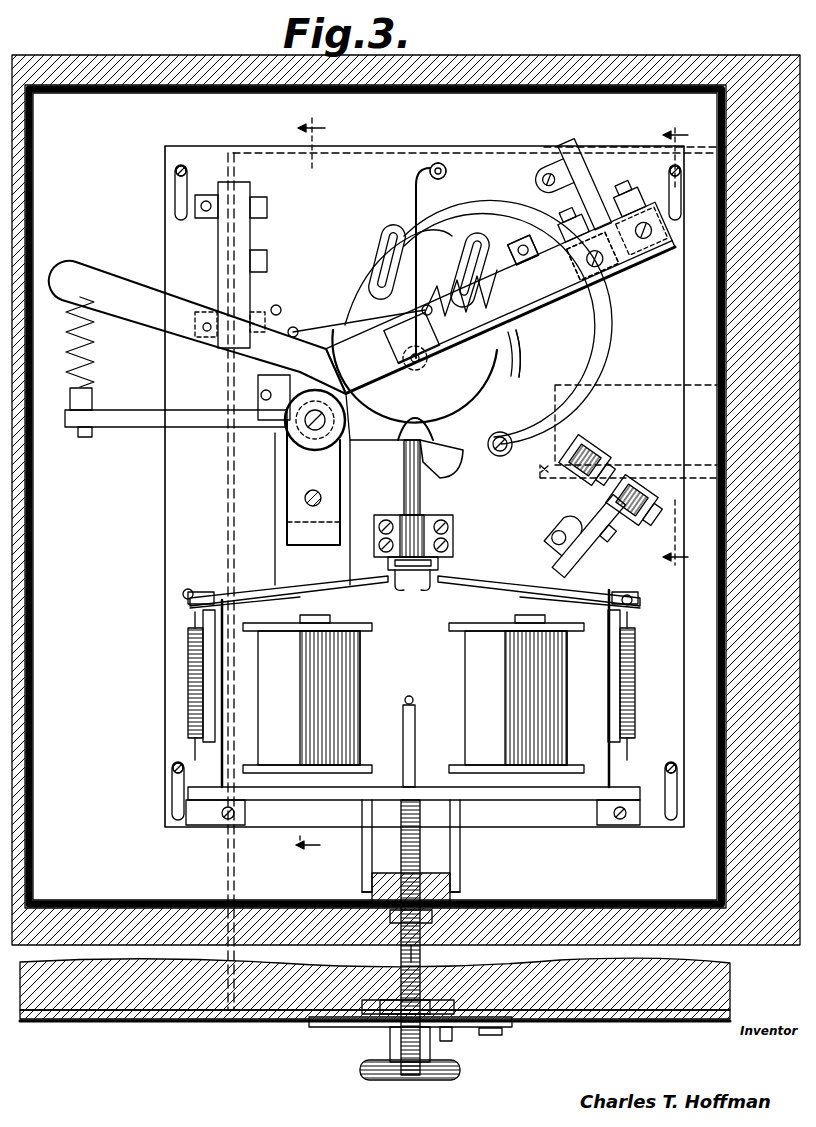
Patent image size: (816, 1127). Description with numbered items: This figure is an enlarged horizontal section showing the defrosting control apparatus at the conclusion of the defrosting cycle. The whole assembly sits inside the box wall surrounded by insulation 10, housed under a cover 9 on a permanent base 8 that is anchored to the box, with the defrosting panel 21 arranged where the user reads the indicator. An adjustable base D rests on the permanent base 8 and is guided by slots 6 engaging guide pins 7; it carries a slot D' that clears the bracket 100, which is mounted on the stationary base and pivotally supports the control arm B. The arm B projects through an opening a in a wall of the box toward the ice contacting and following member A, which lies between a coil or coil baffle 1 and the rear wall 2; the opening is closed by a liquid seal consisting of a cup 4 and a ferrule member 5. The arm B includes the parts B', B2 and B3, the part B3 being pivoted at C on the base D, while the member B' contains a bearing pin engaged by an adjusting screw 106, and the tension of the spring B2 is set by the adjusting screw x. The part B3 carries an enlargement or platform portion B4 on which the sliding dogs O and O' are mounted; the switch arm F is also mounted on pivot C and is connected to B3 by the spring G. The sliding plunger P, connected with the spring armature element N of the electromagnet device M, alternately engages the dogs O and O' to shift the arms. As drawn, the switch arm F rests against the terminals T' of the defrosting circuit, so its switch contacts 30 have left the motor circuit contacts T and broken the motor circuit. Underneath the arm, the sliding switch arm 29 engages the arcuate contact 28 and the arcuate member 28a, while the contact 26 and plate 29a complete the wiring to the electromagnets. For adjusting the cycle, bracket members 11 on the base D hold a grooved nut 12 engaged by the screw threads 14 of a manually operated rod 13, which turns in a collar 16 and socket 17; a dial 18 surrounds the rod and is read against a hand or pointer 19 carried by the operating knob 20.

The insulation 10 is at (682, 70).
The cover 9 is at (35, 635).
The permanent base 8 is at (375, 496).
The defrosting panel 21 is at (180, 1020).
The adjustable base D is at (424, 486).
The rear wall 2 is at (512, 152).
The cup 4 is at (309, 483).
The ferrule member 5 is at (675, 349).
The slots 6 is at (175, 196).
The guide pins 7 is at (178, 168).
The control arm part B3 is at (128, 283).
The spring B2 is at (92, 362).
The control arm member B' is at (176, 438).
The adjusting screw x is at (84, 438).
The adjusting screw 106 is at (310, 415).
The control arm B is at (295, 467).
The bracket 100 is at (300, 495).
The slot D' is at (347, 509).
The pivot C is at (414, 335).
The plate 29a is at (428, 356).
The enlargement or platform portion B4 is at (446, 230).
The arcuate contact 28 is at (528, 380).
The arcuate member 28a is at (518, 356).
The contact 26 is at (412, 190).
The opening a is at (429, 165).
The sliding dog O is at (379, 250).
The sliding dog O' is at (483, 252).
The spring G is at (433, 295).
The switch arm F is at (614, 298).
The switch contacts 30 is at (638, 262).
The sliding switch arm 29 is at (528, 266).
The terminals T' is at (578, 192).
The ice contacting and following member A is at (623, 391).
The motor circuit contacts T is at (601, 504).
The coil or coil baffle 1 is at (545, 470).
The sliding plunger P is at (425, 498).
The spring armature element N is at (458, 590).
The electromagnet device M is at (490, 678).
The bracket members 11 is at (362, 856).
The screw threads 14 is at (400, 858).
The grooved nut 12 is at (452, 880).
The manually operated rod 13 is at (420, 962).
The collar 16 is at (382, 1018).
The dial 18 is at (325, 1028).
The socket 17 is at (446, 1028).
The hand or pointer 19 is at (495, 1036).
The operating knob 20 is at (392, 1078).